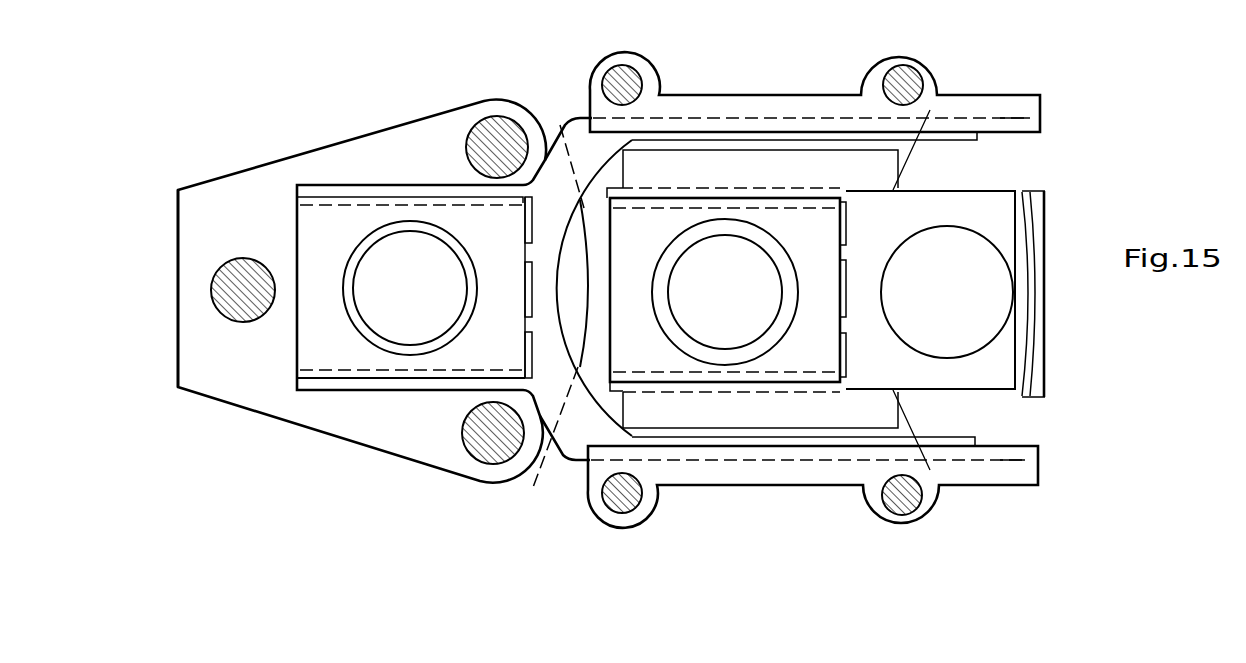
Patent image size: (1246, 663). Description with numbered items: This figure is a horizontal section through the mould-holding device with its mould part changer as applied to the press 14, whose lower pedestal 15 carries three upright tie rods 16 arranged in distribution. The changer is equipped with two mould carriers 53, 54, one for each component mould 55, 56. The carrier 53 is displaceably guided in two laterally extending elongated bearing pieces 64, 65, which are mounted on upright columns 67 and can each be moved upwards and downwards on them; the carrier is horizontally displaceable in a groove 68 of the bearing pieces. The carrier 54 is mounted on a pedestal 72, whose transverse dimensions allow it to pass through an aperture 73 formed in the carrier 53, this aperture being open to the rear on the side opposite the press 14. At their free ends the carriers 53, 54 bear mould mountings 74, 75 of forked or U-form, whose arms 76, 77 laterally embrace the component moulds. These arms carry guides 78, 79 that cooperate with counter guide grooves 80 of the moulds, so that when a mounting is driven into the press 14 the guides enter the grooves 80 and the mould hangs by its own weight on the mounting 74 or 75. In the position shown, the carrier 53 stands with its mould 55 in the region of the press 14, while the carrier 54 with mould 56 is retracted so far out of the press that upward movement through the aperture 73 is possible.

The press 14 is at (193, 397).
The lower pedestal 15 is at (236, 188).
The tie rods 16 is at (247, 273).
The mould carrier 53 is at (566, 100).
The mould carrier 54 is at (996, 175).
The component mould 55 is at (506, 252).
The component mould 56 is at (641, 277).
The upper bearing piece 64 is at (1027, 102).
The lower bearing piece 65 is at (1018, 480).
The upright columns 67 is at (622, 78).
The groove 68 is at (1020, 122).
The pedestal 72 is at (893, 167).
The aperture 73 is at (593, 192).
The mould mounting 74 is at (403, 398).
The mould mounting 75 is at (823, 187).
The arms 76 is at (333, 186).
The arms 77 is at (763, 197).
The guides 78 is at (394, 200).
The guides 79 is at (707, 205).
The counter guide grooves 80 is at (303, 372).